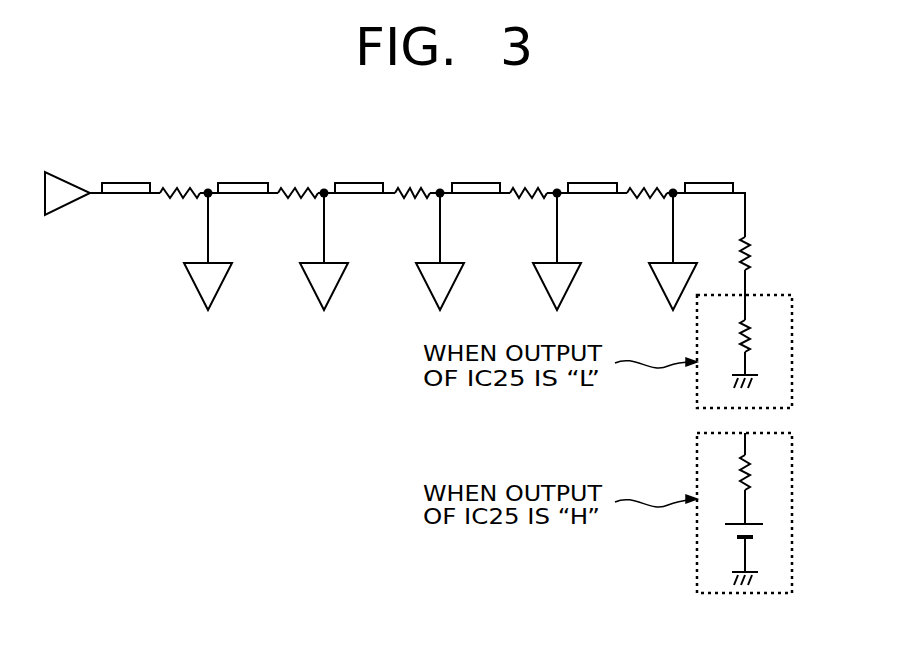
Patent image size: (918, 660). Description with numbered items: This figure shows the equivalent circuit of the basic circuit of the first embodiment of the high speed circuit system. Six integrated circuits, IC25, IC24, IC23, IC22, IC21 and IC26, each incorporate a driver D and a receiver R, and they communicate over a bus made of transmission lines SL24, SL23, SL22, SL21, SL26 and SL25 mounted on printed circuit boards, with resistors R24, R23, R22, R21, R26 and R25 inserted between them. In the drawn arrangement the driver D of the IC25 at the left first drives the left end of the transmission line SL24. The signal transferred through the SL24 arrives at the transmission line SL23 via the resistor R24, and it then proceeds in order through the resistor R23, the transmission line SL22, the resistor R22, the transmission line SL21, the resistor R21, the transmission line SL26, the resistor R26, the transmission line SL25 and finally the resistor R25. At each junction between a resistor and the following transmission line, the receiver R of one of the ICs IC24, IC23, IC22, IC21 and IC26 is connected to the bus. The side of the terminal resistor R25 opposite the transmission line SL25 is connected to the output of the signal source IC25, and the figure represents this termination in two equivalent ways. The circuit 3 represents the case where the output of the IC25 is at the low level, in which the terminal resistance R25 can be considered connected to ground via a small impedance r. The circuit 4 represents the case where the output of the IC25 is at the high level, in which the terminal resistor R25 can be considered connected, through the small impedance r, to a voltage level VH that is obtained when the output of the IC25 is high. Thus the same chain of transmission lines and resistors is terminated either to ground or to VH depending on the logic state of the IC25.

The circuit 3 is at (719, 340).
The circuit 4 is at (719, 513).
The IC IC25 is at (55, 172).
The IC IC24 is at (191, 254).
The IC IC23 is at (307, 254).
The IC IC22 is at (423, 254).
The IC IC21 is at (540, 254).
The IC IC26 is at (656, 254).
The transmission line SL24 is at (125, 173).
The transmission line SL23 is at (243, 173).
The transmission line SL22 is at (358, 173).
The transmission line SL21 is at (475, 173).
The transmission line SL26 is at (592, 173).
The transmission line SL25 is at (708, 173).
The resistor R24 is at (180, 208).
The resistor R23 is at (298, 208).
The resistor R22 is at (412, 208).
The resistor R21 is at (528, 208).
The resistor R26 is at (646, 208).
The terminal resistor R25 is at (768, 253).
The small impedance r is at (753, 336).
The voltage level VH is at (764, 550).